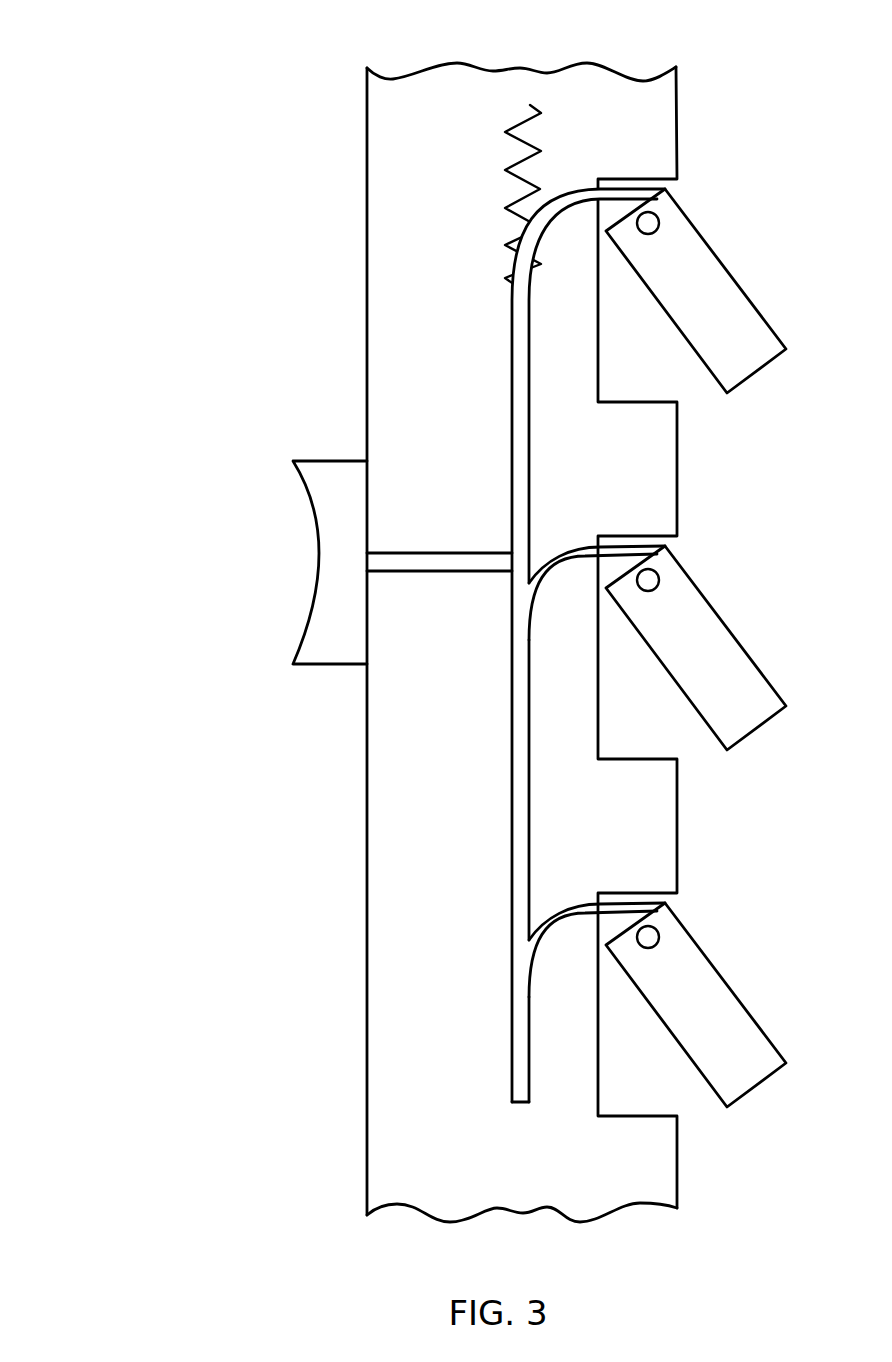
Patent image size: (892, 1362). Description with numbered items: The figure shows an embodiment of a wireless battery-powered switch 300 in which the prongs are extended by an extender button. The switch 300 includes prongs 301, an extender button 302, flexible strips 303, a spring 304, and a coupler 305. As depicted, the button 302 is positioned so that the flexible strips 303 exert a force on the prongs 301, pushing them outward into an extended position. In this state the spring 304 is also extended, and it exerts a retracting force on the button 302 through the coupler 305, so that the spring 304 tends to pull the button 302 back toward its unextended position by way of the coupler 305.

The switch 300 is at (150, 102).
The prongs 301 is at (724, 307).
The extender button 302 is at (313, 537).
The flexible strips 303 is at (566, 216).
The spring 304 is at (503, 166).
The coupler 305 is at (512, 472).